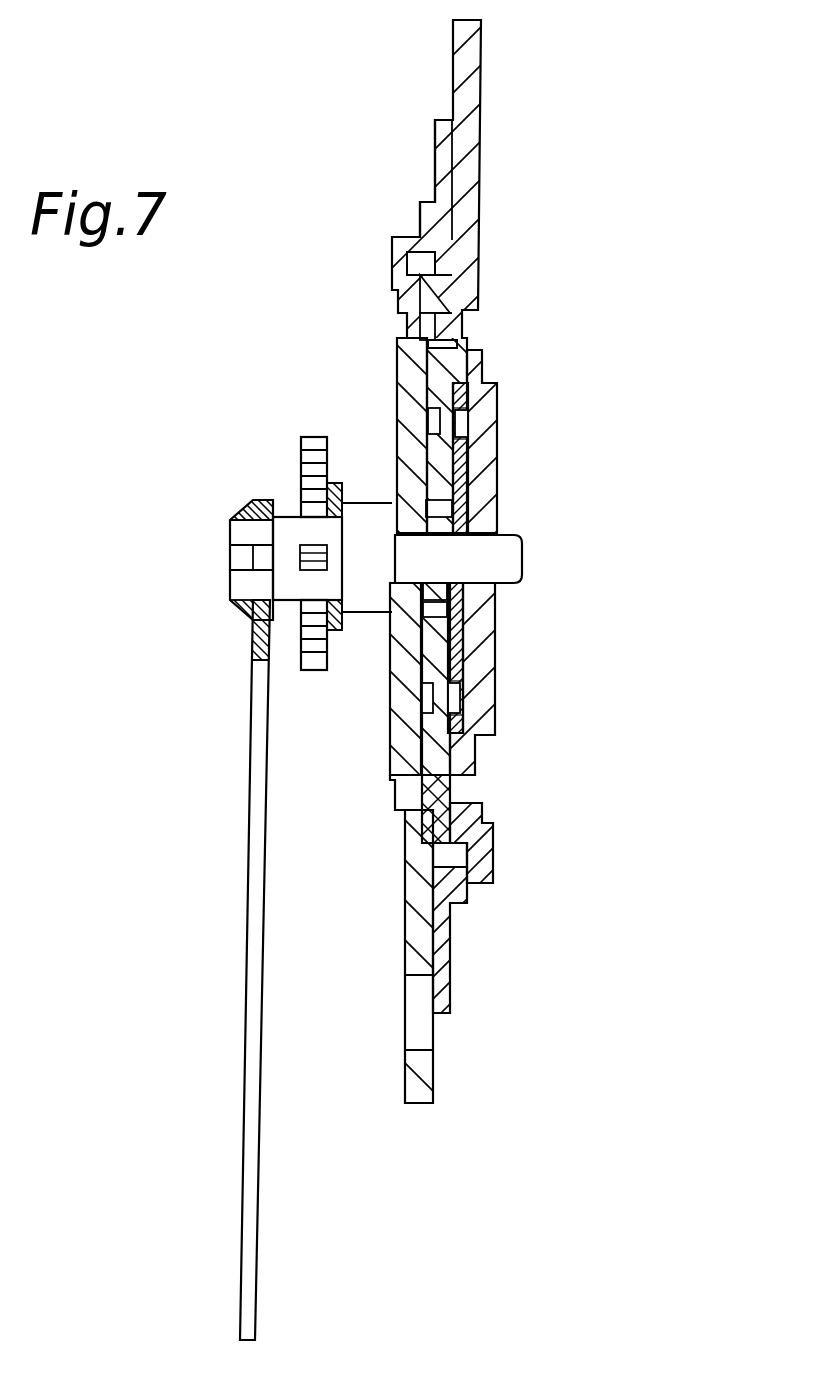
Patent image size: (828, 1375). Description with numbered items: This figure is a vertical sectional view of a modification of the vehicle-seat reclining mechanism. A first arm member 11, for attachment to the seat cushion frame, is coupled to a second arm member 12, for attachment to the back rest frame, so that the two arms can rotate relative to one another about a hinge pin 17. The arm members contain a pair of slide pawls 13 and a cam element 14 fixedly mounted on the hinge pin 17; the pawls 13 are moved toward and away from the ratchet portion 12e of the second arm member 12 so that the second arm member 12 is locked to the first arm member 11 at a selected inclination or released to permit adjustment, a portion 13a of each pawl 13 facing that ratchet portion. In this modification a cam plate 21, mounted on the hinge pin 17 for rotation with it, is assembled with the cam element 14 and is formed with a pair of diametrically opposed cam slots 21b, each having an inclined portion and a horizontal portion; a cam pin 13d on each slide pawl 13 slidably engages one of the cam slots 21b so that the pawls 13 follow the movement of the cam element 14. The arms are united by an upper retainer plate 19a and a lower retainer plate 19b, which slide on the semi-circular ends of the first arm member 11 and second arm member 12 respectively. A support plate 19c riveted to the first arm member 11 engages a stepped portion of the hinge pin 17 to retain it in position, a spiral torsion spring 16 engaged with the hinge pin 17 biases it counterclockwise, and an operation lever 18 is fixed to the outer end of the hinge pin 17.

The first arm member 11 is at (405, 900).
The second arm member 12 is at (490, 100).
The engaging portion of shaft 12e is at (487, 348).
The slide pawls 13 is at (420, 380).
The engaging groove of housing 13a is at (529, 570).
The cam pin 13d is at (480, 420).
The cam element 14 is at (458, 600).
The spiral torsion spring 16 is at (300, 650).
The hinge pin 17 is at (512, 556).
The operation lever 18 is at (257, 842).
The upper retainer plate 19a is at (440, 190).
The lower retainer plate 19b is at (455, 900).
The support plate 19c is at (307, 490).
The cam plate 21 is at (480, 488).
The cam slots 21b is at (549, 541).